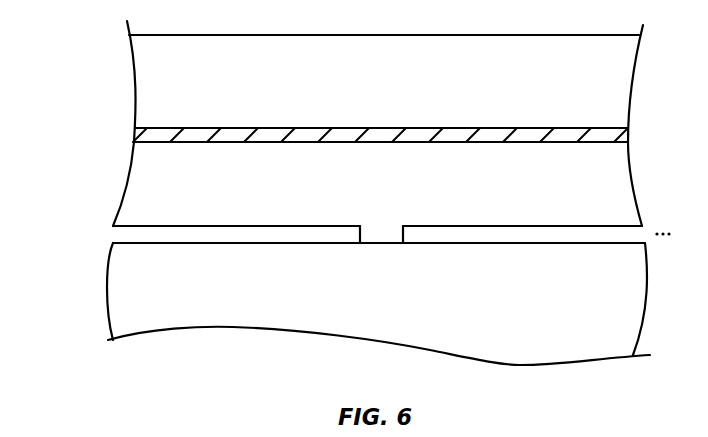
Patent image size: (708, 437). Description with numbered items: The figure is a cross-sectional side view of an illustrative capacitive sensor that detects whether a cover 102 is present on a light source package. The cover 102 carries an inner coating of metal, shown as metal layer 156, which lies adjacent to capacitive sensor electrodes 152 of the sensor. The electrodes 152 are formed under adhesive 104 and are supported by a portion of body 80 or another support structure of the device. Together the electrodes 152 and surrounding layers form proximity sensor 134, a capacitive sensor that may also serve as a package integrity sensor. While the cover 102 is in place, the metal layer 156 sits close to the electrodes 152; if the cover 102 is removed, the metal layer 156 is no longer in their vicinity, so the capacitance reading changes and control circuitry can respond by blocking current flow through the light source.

The body 80 is at (566, 346).
The cover 102 is at (615, 86).
The adhesive 104 is at (617, 185).
The proximity sensor 134 is at (332, 258).
The capacitive sensor electrodes 152 is at (448, 234).
The metal layer 156 is at (628, 138).